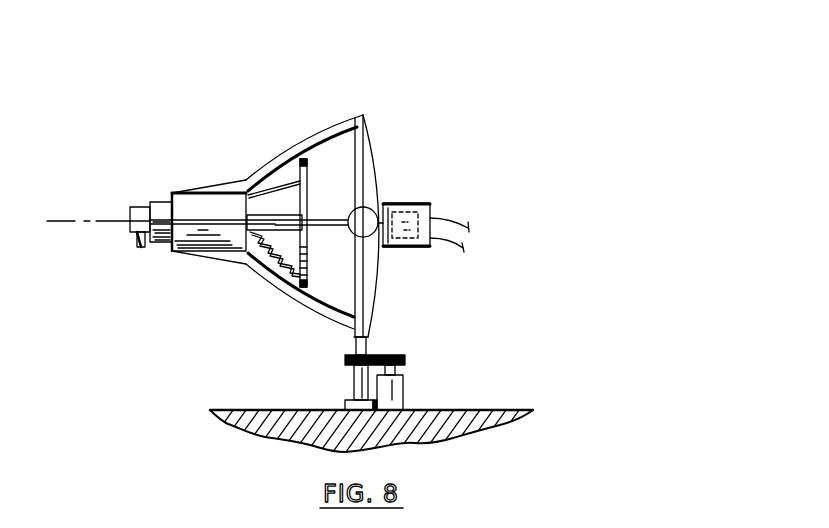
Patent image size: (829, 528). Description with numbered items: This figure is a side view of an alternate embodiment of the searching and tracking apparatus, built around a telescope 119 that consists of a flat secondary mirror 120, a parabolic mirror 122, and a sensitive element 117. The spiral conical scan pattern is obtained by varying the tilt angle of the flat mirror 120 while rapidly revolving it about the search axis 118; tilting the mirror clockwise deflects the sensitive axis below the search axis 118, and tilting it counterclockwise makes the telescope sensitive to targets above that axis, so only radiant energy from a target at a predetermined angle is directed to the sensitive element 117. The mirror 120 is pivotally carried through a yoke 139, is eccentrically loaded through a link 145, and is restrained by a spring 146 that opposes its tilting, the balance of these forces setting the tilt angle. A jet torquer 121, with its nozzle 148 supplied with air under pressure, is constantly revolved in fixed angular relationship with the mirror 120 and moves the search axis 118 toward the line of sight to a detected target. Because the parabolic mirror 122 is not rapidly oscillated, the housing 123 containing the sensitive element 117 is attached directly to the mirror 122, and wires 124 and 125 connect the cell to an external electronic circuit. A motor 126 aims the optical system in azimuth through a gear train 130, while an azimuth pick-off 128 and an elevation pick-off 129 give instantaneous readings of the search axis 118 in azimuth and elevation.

The sensitive element 117 is at (389, 240).
The search axis 118 is at (101, 222).
The telescope 119 is at (380, 181).
The flat secondary mirror 120 is at (303, 193).
The jet torquer 121 is at (140, 212).
The parabolic mirror 122 is at (367, 145).
The housing 123 is at (428, 207).
The wire 124 is at (453, 218).
The wire 125 is at (458, 249).
The motor 126 is at (388, 398).
The azimuth pick-off 128 is at (352, 402).
The elevation pick-off 129 is at (367, 215).
The gear train 130 is at (395, 355).
The yoke 139 is at (291, 215).
The link 145 is at (262, 196).
The spring 146 is at (275, 260).
The nozzle 148 is at (138, 242).